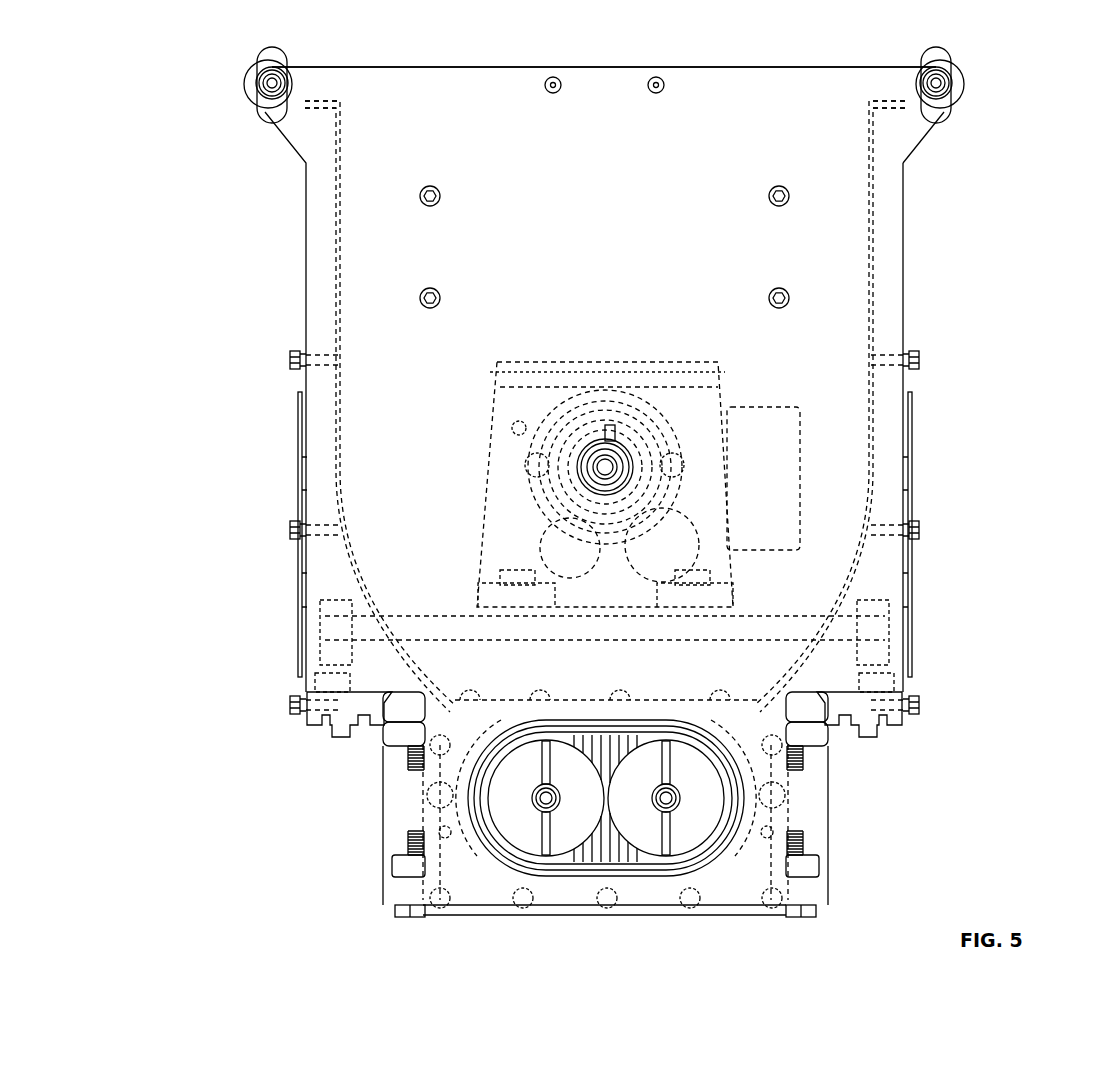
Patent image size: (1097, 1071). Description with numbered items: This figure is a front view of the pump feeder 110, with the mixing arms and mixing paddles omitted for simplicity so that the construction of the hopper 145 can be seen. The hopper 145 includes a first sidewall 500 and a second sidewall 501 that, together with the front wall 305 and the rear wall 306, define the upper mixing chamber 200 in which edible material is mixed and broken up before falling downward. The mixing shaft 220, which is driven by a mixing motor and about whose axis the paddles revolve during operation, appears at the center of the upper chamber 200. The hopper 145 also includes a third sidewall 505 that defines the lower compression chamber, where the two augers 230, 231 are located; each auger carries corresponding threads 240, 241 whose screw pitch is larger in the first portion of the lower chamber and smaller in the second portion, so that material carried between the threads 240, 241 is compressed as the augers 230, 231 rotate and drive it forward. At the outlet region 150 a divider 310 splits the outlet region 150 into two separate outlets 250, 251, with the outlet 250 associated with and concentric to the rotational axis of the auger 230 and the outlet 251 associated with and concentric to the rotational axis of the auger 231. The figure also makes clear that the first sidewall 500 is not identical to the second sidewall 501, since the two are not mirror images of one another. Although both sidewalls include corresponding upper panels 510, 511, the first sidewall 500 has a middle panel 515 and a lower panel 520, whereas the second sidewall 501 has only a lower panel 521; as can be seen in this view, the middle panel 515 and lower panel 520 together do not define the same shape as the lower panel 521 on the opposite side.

The pump feeder 110 is at (196, 229).
The hopper 145 is at (430, 107).
The outlet region 150 is at (438, 786).
The upper mixing chamber 200 is at (628, 225).
The mixing shaft 220 is at (615, 455).
The auger 230 is at (527, 840).
The auger 231 is at (695, 810).
The threads 240 is at (578, 832).
The threads 241 is at (702, 768).
The outlet 250 is at (575, 728).
The outlet 251 is at (640, 745).
The front wall 305 is at (905, 172).
The rear wall 306 is at (818, 110).
The divider 310 is at (608, 838).
The first sidewall 500 is at (333, 310).
The second sidewall 501 is at (880, 312).
The third sidewall 505 is at (708, 674).
The upper panel 510 is at (343, 143).
The upper panel 511 is at (873, 222).
The middle panel 515 is at (300, 557).
The lower panel 520 is at (383, 742).
The lower panel 521 is at (880, 730).